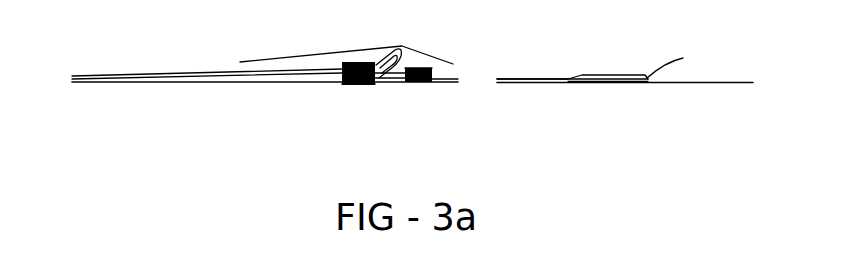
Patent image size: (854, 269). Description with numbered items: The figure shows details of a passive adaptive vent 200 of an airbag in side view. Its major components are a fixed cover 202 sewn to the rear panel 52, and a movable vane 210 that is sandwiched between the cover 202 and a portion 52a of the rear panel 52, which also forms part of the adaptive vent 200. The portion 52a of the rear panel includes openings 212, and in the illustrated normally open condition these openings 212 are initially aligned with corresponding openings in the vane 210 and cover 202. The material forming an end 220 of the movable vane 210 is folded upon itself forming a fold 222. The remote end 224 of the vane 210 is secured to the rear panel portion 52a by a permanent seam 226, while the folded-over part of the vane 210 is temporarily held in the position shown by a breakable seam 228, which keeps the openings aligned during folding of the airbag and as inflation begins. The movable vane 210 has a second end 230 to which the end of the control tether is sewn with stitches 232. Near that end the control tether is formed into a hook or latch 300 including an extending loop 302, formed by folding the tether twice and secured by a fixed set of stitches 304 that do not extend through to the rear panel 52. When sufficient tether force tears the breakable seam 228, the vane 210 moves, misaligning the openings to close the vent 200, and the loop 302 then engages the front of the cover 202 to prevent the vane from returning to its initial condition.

The rear panel 52 is at (697, 88).
The portion of the rear panel 52a is at (180, 84).
The adaptive vent 200 is at (588, 126).
The fixed cover 202 is at (272, 58).
The movable vane 210 is at (512, 79).
The openings 212 is at (478, 78).
The end of the movable vane 220 is at (612, 76).
The fold 222 is at (687, 61).
The remote end of the vane 224 is at (588, 84).
The permanent seam 226 is at (575, 84).
The breakable seam 228 is at (612, 73).
The second end of the vane 230 is at (442, 82).
The stitches 232 is at (428, 70).
The hook or latch 300 is at (343, 74).
The extending loop 302 is at (385, 63).
The fixed set of stitches 304 is at (347, 82).